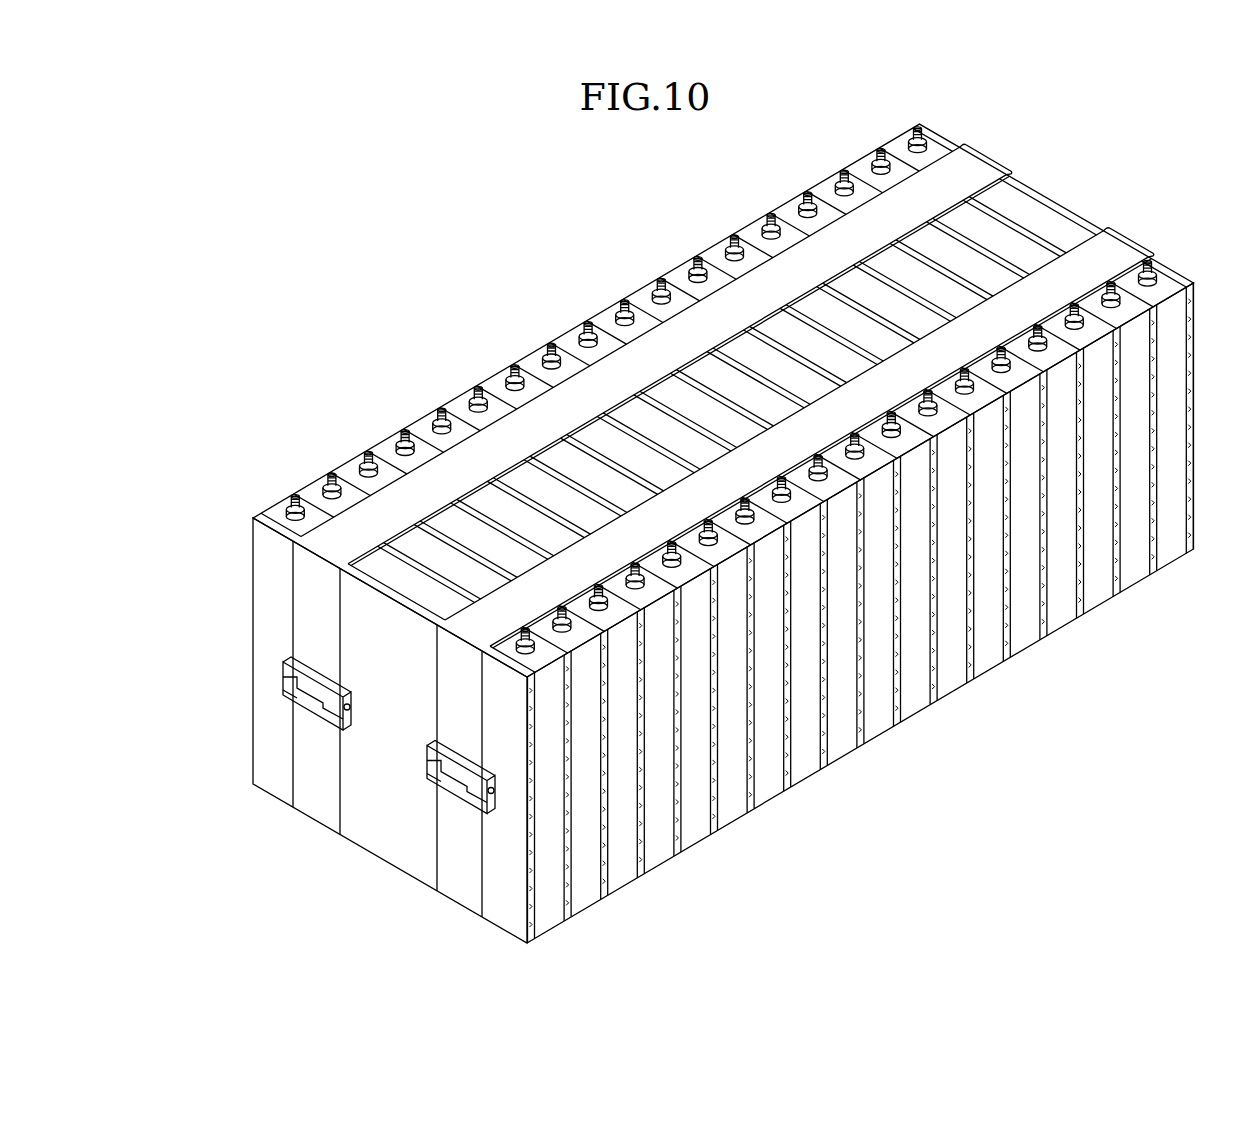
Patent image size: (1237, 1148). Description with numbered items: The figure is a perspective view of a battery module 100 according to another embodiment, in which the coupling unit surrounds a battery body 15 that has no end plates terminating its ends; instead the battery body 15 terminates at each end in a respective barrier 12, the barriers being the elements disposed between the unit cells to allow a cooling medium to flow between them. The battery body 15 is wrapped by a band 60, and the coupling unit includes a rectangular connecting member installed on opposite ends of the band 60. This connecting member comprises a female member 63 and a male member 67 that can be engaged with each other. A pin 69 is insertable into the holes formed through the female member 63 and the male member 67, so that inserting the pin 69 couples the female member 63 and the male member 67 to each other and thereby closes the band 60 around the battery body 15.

The battery module 100 is at (587, 200).
The barrier 12 is at (272, 523).
The battery body 15 is at (531, 319).
The band 60 is at (303, 613).
The female member 63 is at (283, 671).
The male member 67 is at (307, 694).
The pin 69 is at (347, 706).